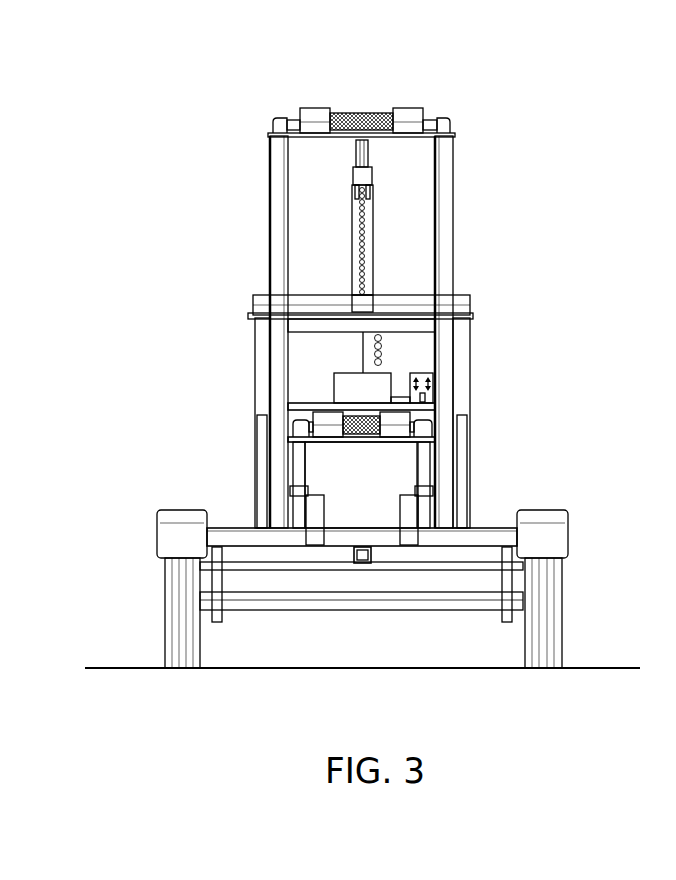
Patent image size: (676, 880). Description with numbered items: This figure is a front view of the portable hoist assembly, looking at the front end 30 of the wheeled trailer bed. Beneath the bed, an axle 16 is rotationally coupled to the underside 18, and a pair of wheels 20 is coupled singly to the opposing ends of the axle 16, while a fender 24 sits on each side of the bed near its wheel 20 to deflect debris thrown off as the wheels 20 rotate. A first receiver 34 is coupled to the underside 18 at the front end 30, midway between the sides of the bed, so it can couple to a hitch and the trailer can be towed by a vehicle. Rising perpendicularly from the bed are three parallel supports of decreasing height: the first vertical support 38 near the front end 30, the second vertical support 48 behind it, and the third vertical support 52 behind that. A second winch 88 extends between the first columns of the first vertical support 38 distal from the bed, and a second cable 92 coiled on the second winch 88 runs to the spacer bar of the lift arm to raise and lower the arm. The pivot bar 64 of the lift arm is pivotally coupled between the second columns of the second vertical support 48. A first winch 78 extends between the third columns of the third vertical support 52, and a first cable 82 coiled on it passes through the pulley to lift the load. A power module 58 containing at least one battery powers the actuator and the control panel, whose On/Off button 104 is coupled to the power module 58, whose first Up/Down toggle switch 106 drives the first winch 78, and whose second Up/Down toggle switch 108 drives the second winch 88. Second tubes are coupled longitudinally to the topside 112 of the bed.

The axle 16 is at (338, 612).
The underside 18 is at (462, 567).
The wheel 20 is at (173, 588).
The fender 24 is at (178, 522).
The front end 30 is at (487, 537).
The first receiver 34 is at (370, 565).
The first vertical support 38 is at (446, 190).
The second vertical support 48 is at (258, 330).
The third vertical support 52 is at (295, 453).
The power module 58 is at (333, 385).
The pivot bar 64 is at (422, 295).
The first winch 78 is at (325, 418).
The first cable 82 is at (383, 432).
The second winch 88 is at (418, 107).
The second cable 92 is at (362, 112).
The On/Off button 104 is at (437, 397).
The first Up/Down toggle switch 106 is at (437, 380).
The second Up/Down toggle switch 108 is at (428, 372).
The topside 112 is at (365, 525).